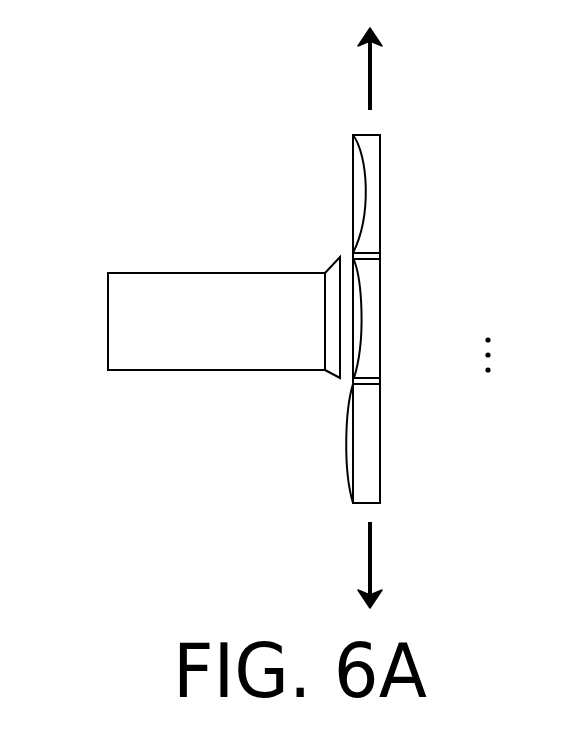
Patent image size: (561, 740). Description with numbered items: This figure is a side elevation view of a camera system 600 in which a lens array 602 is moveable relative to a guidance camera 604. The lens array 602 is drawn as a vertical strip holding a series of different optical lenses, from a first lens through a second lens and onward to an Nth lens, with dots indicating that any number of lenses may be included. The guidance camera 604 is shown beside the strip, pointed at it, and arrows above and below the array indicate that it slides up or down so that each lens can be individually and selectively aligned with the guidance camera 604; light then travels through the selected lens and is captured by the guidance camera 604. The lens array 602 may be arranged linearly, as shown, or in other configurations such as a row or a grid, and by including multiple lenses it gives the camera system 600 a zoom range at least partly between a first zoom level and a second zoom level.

The camera system 600 is at (272, 95).
The lens array 602 is at (433, 298).
The guidance camera 604 is at (130, 273).